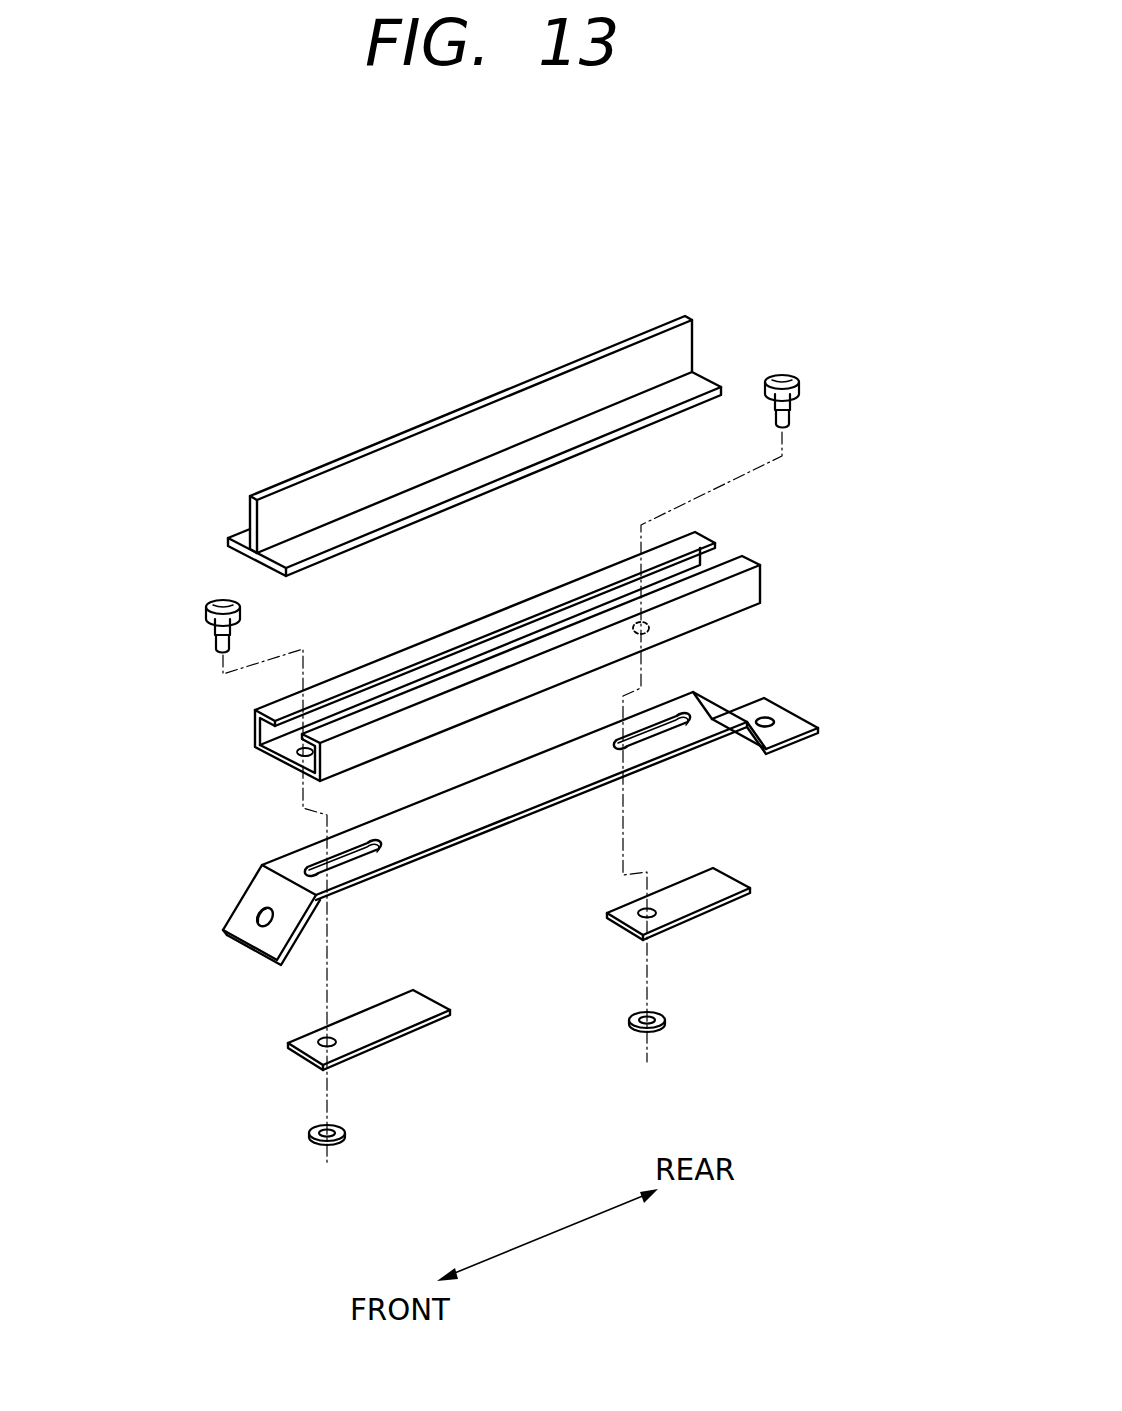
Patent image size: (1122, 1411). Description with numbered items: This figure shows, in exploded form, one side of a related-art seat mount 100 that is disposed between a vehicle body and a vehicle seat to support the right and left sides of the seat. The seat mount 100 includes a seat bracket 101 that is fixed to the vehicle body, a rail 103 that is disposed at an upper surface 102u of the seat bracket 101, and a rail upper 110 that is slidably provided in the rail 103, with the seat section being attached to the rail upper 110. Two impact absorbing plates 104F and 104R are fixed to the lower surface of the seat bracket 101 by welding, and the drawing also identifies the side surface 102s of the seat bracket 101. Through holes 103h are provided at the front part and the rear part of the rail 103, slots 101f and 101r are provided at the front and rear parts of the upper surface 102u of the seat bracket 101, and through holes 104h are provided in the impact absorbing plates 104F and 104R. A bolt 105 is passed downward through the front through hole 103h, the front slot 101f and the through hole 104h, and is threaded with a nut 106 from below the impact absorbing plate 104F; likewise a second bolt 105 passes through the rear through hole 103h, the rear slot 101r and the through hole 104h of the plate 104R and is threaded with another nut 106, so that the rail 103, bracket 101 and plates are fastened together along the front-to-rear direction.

The seat mount 100 is at (618, 232).
The rail upper 110 is at (691, 318).
The bolt 105 is at (795, 378).
The rail 103 is at (750, 580).
The through hole 103h is at (650, 626).
The seat bracket 101 is at (470, 850).
The upper surface 102u is at (460, 800).
The side surface of bracket plate 102s is at (545, 812).
The slot 101f is at (380, 830).
The slot 101r is at (677, 722).
The impact absorbing plate 104F is at (413, 1035).
The impact absorbing plate 104R is at (705, 897).
The through hole 104h is at (650, 908).
The nut 106 is at (665, 1022).